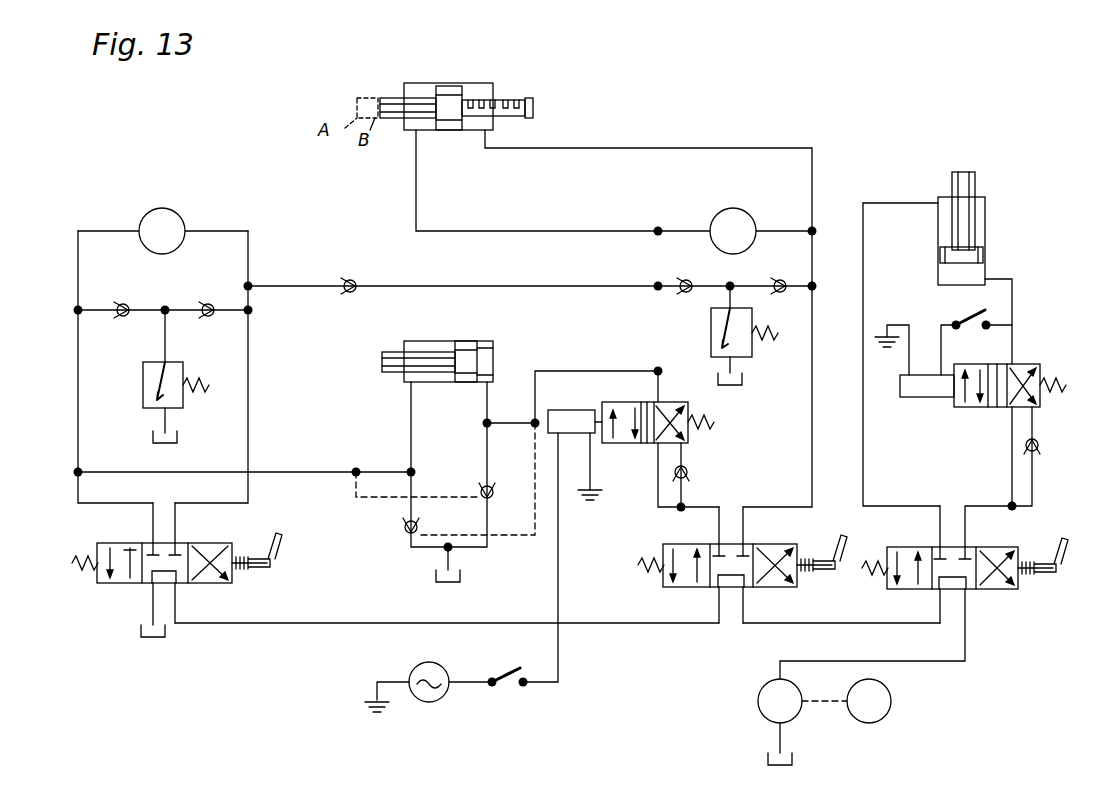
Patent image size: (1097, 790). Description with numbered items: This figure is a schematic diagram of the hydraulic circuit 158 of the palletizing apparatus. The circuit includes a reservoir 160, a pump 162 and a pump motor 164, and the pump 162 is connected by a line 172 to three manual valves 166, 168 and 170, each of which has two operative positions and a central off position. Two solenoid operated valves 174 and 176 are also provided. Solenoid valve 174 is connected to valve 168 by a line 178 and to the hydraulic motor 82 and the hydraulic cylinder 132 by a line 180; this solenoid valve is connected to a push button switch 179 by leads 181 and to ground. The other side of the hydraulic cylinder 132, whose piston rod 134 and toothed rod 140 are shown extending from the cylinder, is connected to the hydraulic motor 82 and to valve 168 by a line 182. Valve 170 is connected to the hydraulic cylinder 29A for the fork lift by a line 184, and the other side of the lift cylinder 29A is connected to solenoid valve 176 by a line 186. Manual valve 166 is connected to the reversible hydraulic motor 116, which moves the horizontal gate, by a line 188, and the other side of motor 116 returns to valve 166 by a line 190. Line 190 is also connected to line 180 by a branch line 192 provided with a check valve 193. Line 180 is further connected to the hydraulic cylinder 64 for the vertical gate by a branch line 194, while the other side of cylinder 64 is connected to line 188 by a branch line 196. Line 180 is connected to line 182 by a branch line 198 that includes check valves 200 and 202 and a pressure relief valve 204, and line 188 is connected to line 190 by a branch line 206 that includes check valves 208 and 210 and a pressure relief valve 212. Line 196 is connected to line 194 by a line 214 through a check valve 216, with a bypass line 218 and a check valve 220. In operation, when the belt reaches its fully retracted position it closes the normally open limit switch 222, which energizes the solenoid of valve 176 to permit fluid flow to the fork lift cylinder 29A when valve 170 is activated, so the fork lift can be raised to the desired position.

The hydraulic cylinder 29A is at (985, 252).
The hydraulic cylinder 64 is at (497, 323).
The hydraulic motor 82 is at (733, 208).
The reversible hydraulic motor 116 is at (170, 208).
The hydraulic cylinder 132 is at (449, 86).
The piston rod 134 is at (395, 98).
The rack rod 140 is at (530, 98).
The hydraulic circuit 158 is at (829, 97).
The reservoir 160 is at (768, 763).
The pump 162 is at (760, 688).
The pump motor 164 is at (891, 703).
The manual valve 166 is at (138, 592).
The manual valve 168 is at (698, 600).
The manual valve 170 is at (985, 592).
The line 172 is at (310, 623).
The solenoid operated valve 174 is at (622, 443).
The solenoid operated valve 176 is at (1020, 364).
The line 178 is at (700, 507).
The push button switch 179 is at (505, 693).
The line 180 is at (595, 215).
The leads 181 is at (559, 652).
The line 182 is at (648, 148).
The line 184 is at (863, 445).
The line 186 is at (1012, 305).
The line 188 is at (78, 396).
The line 190 is at (248, 415).
The branch line 192 is at (478, 272).
The check valve 193 is at (345, 292).
The branch line 194 is at (585, 359).
The branch line 196 is at (318, 458).
The branch line 198 is at (740, 282).
The check valve 200 is at (702, 268).
The check valve 202 is at (786, 282).
The pressure relief valve 204 is at (711, 338).
The branch line 206 is at (173, 289).
The check valve 208 is at (118, 316).
The check valve 210 is at (205, 316).
The pressure relief valve 212 is at (150, 400).
The line 214 is at (385, 497).
The check valve 216 is at (490, 486).
The bypass line 218 is at (510, 535).
The check valve 220 is at (405, 532).
The limit switch 222 is at (950, 312).